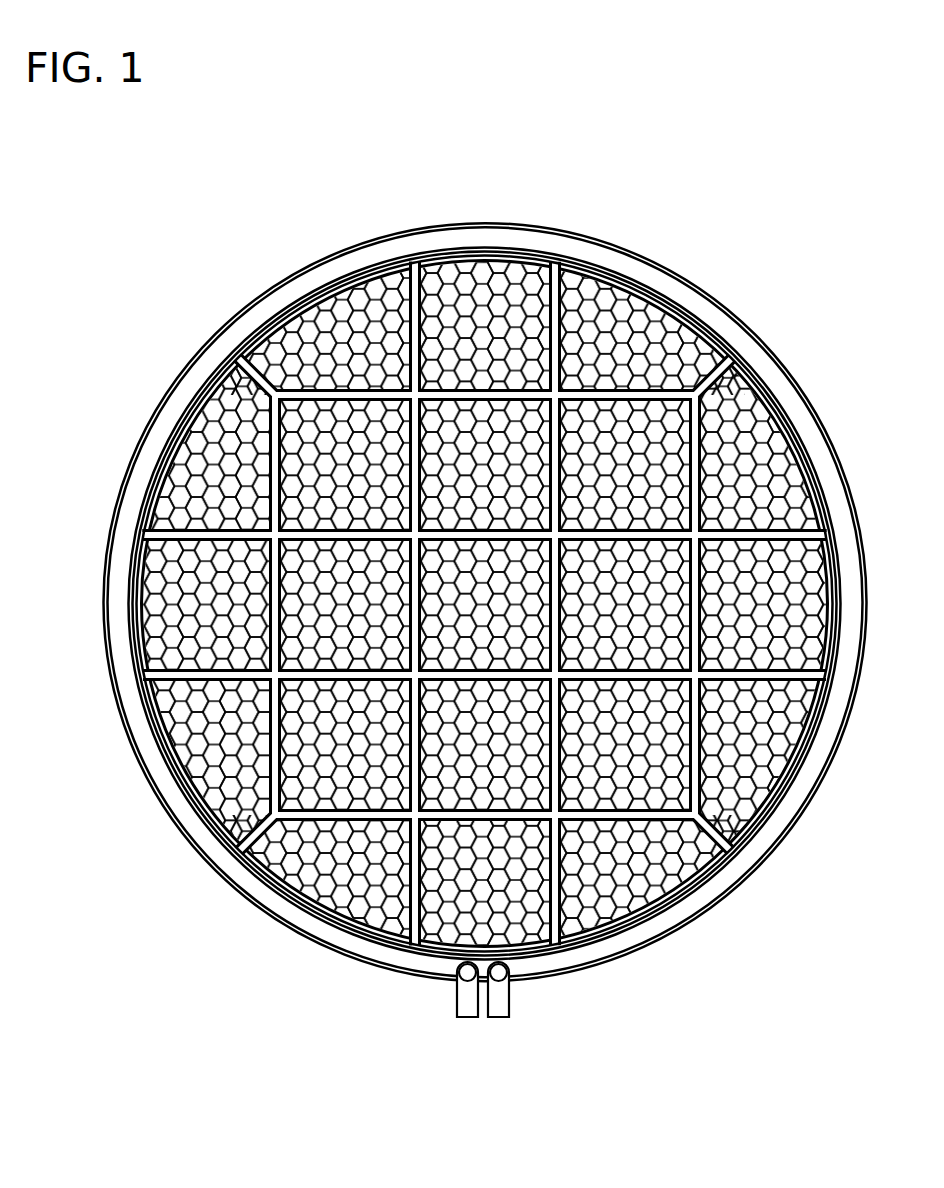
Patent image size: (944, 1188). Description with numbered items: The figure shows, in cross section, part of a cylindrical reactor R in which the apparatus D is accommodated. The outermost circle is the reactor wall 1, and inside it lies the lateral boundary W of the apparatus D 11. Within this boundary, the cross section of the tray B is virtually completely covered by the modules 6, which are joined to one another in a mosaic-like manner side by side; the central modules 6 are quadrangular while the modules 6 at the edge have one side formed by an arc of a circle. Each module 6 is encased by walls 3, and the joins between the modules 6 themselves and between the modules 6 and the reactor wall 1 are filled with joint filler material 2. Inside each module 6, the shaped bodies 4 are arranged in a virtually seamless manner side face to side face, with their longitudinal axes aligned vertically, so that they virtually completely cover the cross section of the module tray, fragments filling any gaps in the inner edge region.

The reactor wall 1 is at (438, 240).
The lateral boundary W of the apparatus D 11 is at (463, 259).
The wall of a module (M) 3 is at (558, 278).
The module (M) 6 is at (484, 562).
The shaped bodies (F1) 4 is at (637, 322).
The joint filler material 2 is at (747, 367).